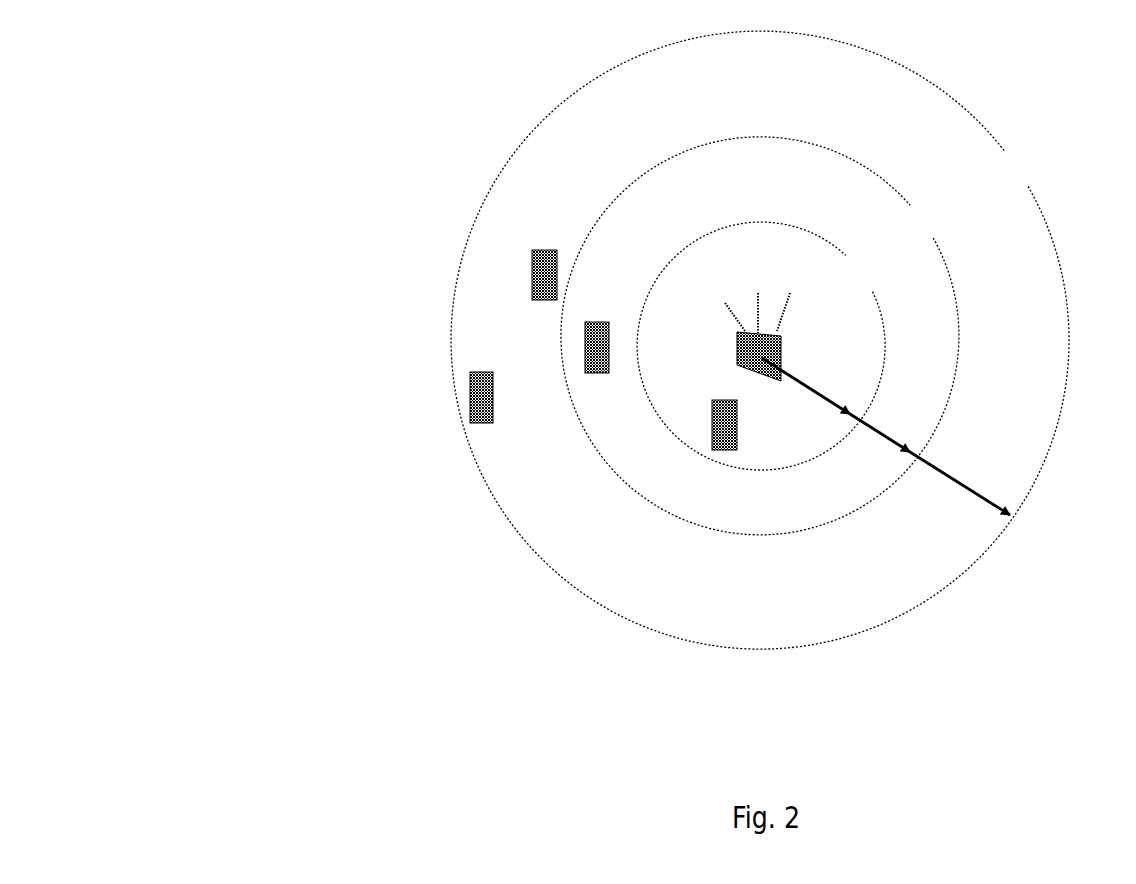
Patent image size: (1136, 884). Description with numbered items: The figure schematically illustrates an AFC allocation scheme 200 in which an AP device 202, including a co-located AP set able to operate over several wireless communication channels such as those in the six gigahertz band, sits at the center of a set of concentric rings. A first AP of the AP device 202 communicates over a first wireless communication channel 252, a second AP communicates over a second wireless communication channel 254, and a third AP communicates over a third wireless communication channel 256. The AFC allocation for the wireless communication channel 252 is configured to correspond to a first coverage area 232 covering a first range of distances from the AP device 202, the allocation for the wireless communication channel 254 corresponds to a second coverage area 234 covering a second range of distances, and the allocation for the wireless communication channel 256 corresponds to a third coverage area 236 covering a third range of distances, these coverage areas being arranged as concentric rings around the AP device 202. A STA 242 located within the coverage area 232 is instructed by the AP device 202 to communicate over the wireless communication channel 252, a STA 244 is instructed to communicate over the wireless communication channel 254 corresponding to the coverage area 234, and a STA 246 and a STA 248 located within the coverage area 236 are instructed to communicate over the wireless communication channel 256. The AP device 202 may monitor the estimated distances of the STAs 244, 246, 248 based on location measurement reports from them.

The AFC allocation scheme 200 is at (285, 675).
The AP device 202 is at (738, 358).
The first coverage area 232 is at (878, 338).
The second coverage area 234 is at (945, 300).
The third coverage area 236 is at (1057, 313).
The STA 242 is at (713, 445).
The STA 244 is at (597, 373).
The STA 246 is at (530, 273).
The STA 248 is at (490, 410).
The first wireless communication channel 252 is at (810, 395).
The second wireless communication channel 254 is at (877, 435).
The third wireless communication channel 256 is at (953, 483).